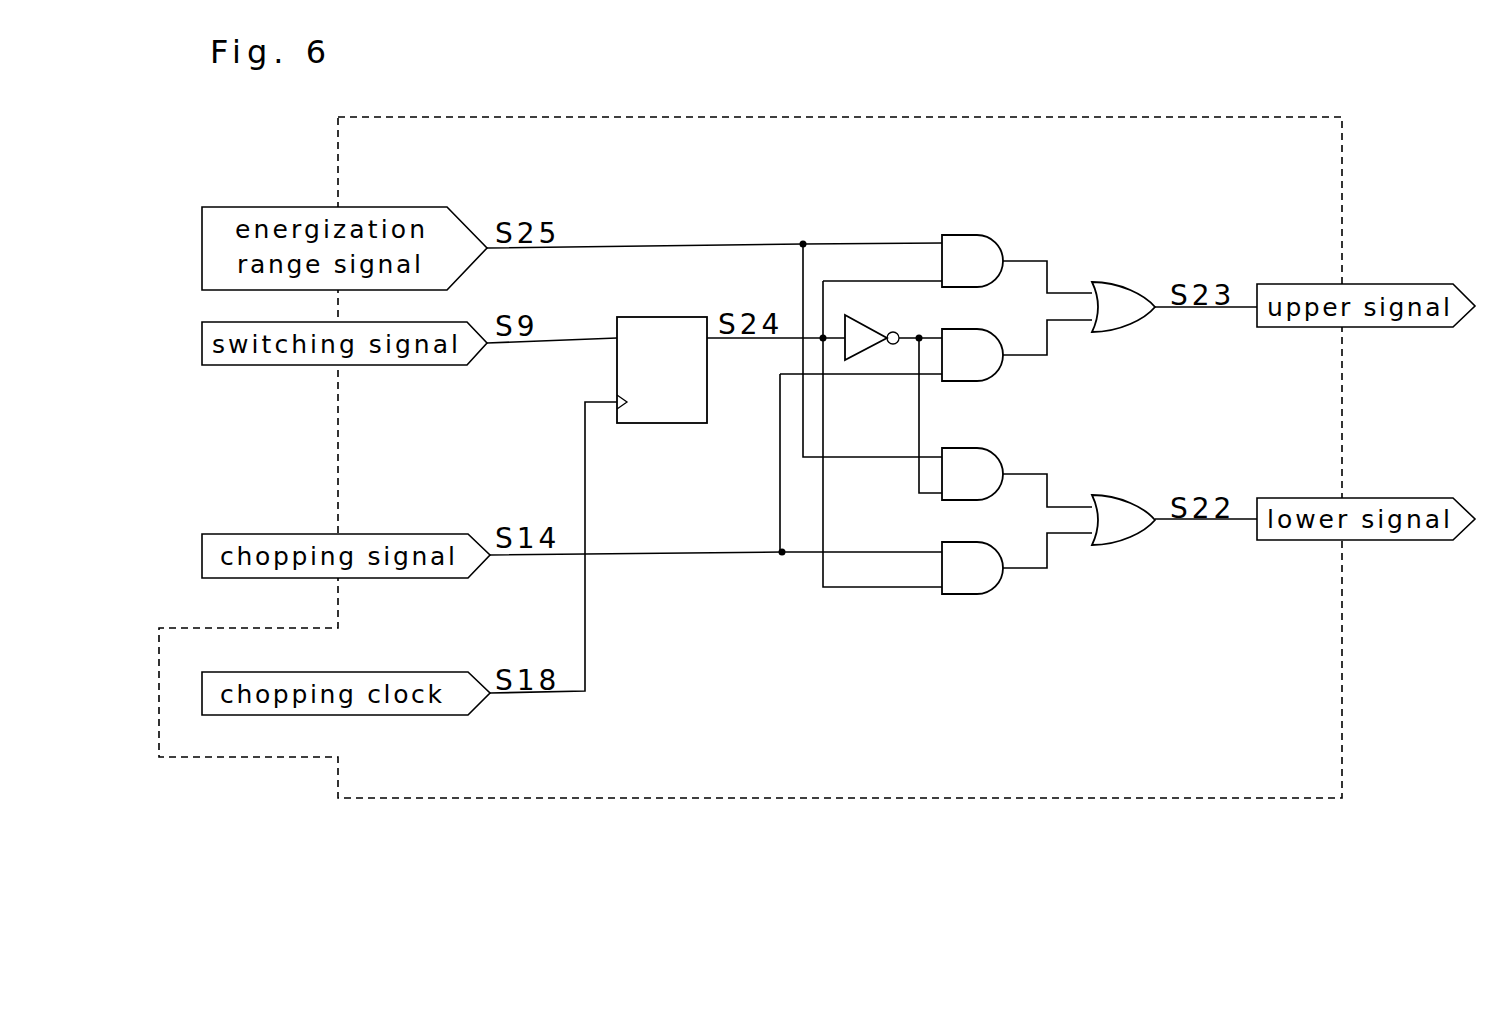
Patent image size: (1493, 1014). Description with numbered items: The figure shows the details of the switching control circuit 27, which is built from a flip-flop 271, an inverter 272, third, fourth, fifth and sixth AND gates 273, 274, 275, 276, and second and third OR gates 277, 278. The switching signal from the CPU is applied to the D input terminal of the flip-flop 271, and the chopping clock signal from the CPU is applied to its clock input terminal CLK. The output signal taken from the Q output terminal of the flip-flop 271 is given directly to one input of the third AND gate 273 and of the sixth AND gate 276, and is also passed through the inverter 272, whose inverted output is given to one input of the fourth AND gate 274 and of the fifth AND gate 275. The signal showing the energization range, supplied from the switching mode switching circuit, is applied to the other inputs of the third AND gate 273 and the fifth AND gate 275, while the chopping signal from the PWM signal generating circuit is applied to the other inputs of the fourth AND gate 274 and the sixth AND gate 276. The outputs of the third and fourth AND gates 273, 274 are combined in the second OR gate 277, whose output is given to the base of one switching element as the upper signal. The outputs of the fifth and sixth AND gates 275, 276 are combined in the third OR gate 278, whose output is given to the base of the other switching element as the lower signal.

The switching control circuit 27 is at (1150, 178).
The flip-flop 271 is at (657, 317).
The inverter 272 is at (875, 327).
The third AND gate 273 is at (973, 236).
The fourth AND gate 274 is at (973, 383).
The fifth AND gate 275 is at (973, 448).
The sixth AND gate 276 is at (973, 594).
The second OR gate 277 is at (1105, 283).
The third OR gate 278 is at (1105, 496).